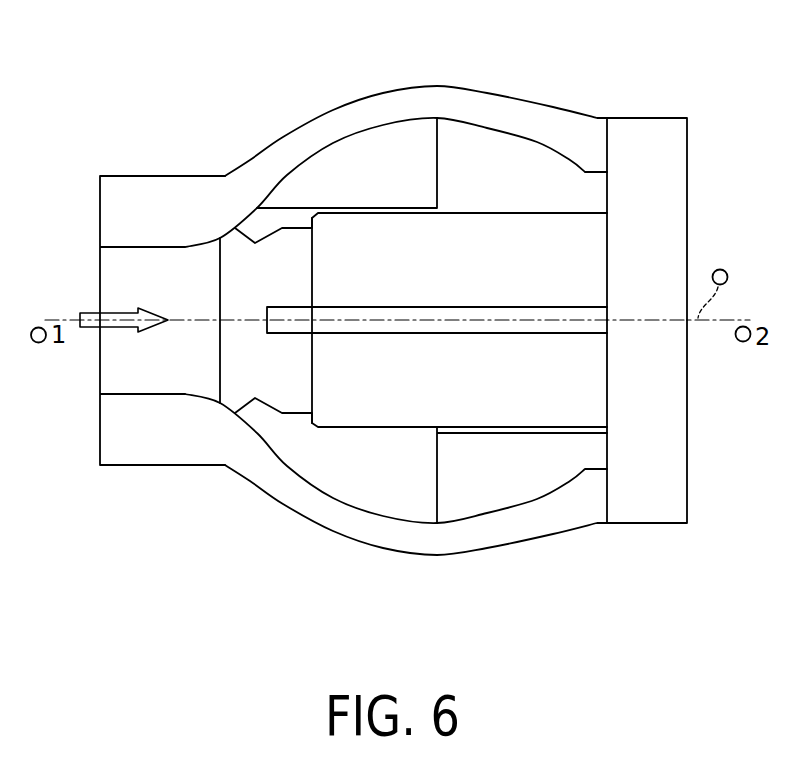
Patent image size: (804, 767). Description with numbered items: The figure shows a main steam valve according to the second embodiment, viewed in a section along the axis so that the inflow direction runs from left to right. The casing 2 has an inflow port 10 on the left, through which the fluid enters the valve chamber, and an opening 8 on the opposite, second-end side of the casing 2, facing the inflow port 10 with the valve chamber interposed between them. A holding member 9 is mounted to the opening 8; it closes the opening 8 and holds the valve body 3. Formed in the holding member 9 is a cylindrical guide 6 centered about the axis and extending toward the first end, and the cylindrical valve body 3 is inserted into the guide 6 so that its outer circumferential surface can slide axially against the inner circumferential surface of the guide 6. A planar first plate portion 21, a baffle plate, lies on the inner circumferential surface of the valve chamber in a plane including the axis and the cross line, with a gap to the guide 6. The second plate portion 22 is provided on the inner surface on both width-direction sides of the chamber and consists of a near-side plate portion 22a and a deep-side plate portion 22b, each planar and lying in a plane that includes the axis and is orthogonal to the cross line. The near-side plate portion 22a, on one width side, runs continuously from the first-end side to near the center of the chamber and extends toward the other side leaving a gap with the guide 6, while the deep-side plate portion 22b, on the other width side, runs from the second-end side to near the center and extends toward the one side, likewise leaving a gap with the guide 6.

The casing 2 is at (553, 517).
The valve body 3 is at (288, 250).
The guide 6 is at (492, 247).
The opening 8 is at (607, 193).
The holding member 9 is at (672, 481).
The inflow port 10 is at (122, 281).
The first plate portion 21 is at (465, 317).
The second plate portion 22 is at (432, 319).
The near-side plate portion 22a is at (372, 150).
The deep-side plate portion 22b is at (463, 498).